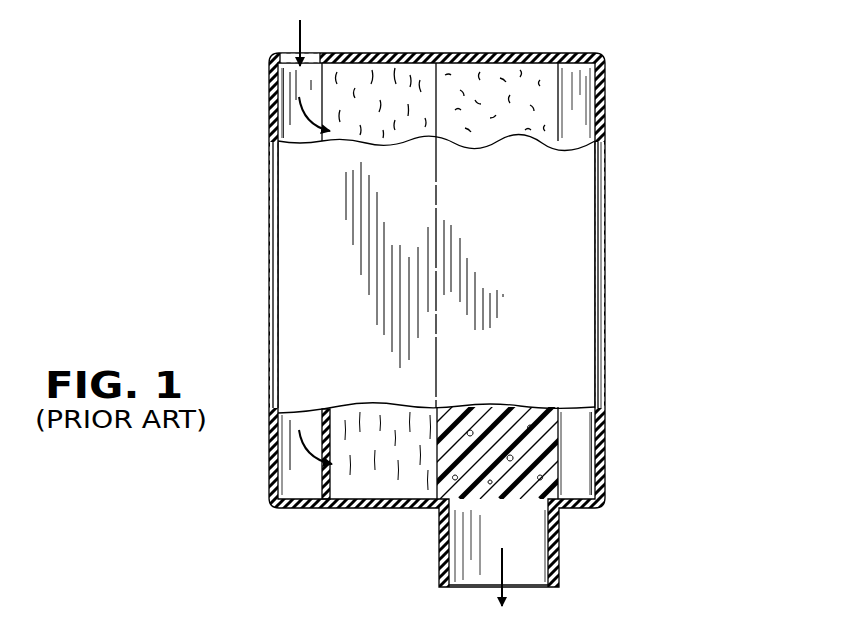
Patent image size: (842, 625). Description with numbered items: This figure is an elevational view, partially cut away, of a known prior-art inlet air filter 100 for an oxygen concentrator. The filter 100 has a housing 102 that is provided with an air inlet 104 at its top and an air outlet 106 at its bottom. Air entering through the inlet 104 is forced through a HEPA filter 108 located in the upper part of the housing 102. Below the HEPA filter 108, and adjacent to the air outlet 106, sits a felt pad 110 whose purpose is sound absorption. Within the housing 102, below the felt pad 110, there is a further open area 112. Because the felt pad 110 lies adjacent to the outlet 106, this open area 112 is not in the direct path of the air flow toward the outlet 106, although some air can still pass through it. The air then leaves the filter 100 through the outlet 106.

The inlet air filter 100 is at (645, 188).
The housing 102 is at (270, 255).
The air inlet 104 is at (290, 55).
The air outlet 106 is at (533, 588).
The HEPA filter 108 is at (378, 83).
The felt pad 110 is at (547, 477).
The open area 112 is at (583, 447).